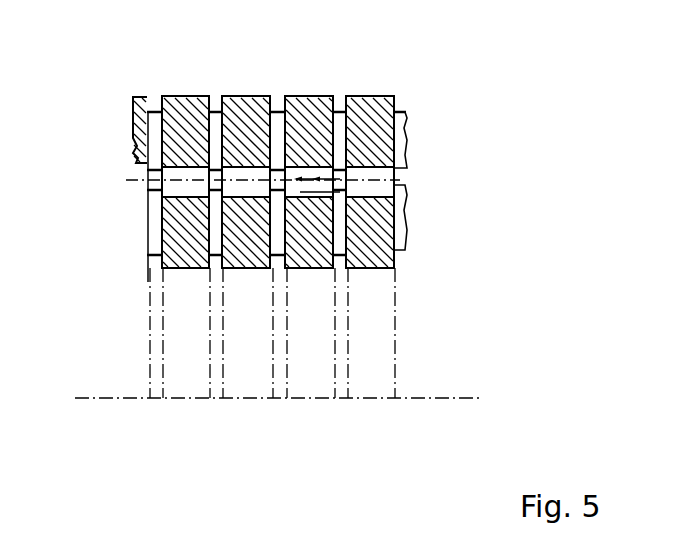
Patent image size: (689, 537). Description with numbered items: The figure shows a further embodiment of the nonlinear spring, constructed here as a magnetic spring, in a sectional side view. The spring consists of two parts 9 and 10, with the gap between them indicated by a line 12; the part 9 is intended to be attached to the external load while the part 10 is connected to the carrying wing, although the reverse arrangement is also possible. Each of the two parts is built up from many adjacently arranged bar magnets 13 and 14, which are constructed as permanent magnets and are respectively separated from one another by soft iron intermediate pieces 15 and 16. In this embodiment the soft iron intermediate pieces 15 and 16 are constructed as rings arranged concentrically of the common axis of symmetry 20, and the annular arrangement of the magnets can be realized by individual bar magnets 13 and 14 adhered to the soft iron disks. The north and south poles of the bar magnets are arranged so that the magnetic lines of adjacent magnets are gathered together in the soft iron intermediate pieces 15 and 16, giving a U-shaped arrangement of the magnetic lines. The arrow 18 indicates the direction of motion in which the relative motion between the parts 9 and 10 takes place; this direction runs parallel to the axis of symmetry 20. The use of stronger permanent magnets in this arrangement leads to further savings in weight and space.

The part 9 is at (468, 122).
The part 10 is at (458, 223).
The line 12 is at (407, 177).
The bar magnets 13 is at (370, 118).
The bar magnets 14 is at (350, 248).
The soft iron intermediate pieces 15 is at (203, 102).
The soft iron intermediate pieces 16 is at (217, 240).
The arrow 18 is at (307, 187).
The common axis of symmetry 20 is at (183, 398).